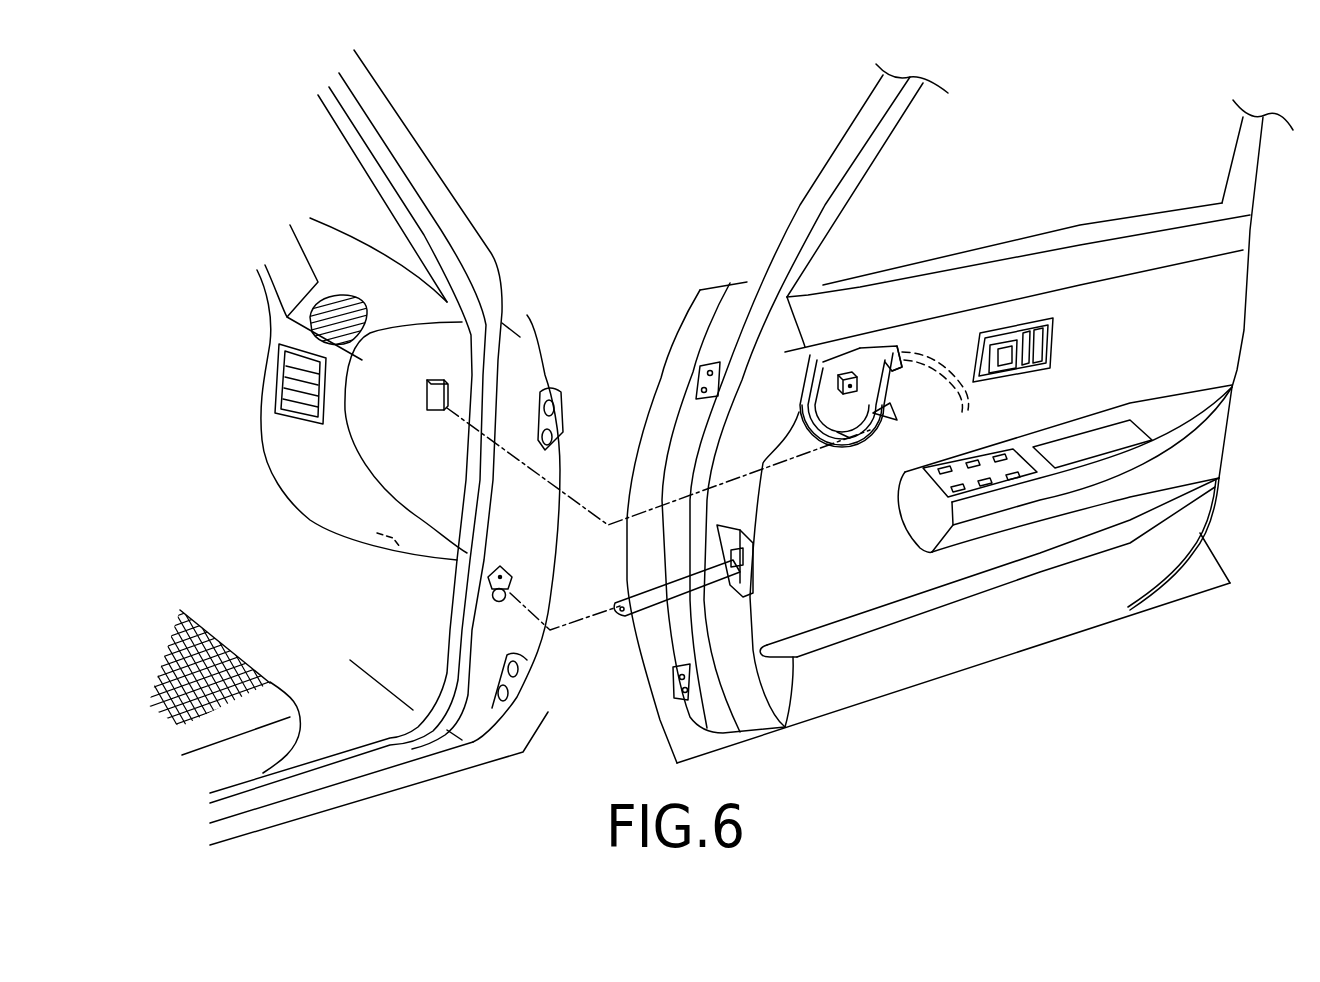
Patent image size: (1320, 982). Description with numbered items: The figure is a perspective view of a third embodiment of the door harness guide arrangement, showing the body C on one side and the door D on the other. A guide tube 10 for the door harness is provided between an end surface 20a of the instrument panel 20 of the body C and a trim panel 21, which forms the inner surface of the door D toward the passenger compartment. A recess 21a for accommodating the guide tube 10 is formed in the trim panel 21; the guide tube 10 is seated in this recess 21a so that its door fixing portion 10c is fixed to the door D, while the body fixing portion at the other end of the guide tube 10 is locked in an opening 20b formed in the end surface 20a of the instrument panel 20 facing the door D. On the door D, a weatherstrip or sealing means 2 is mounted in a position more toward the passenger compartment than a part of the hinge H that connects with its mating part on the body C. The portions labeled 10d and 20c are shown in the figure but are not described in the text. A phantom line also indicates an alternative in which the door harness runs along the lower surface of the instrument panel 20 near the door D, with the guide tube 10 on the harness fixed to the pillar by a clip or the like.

The body C is at (302, 152).
The door D is at (1080, 110).
The hinge H is at (700, 365).
The weatherstrip 2 is at (818, 213).
The guide tube 10 is at (888, 338).
The door fixing portion 10c is at (893, 368).
The holder ring 10d is at (840, 440).
The instrument panel 20 is at (293, 503).
The end surface 20a is at (427, 342).
The opening 20b is at (450, 383).
The clip 20c is at (377, 533).
The trim panel 21 is at (1230, 310).
The recess 21a is at (857, 365).